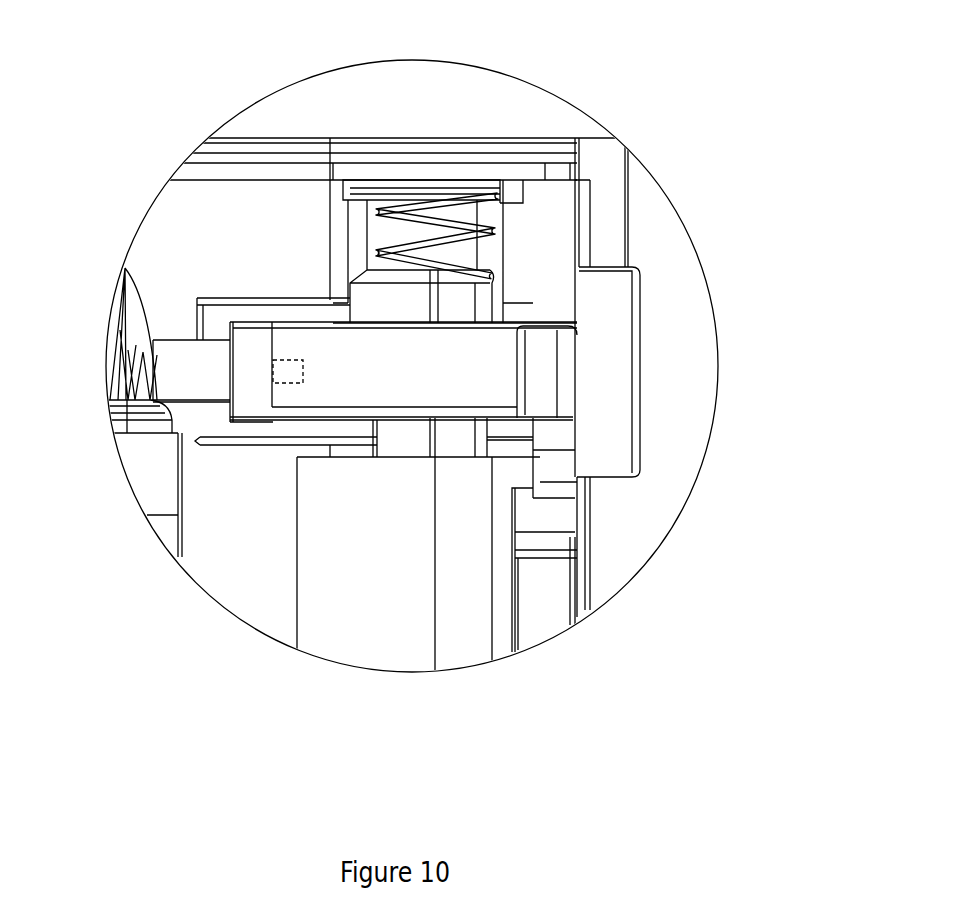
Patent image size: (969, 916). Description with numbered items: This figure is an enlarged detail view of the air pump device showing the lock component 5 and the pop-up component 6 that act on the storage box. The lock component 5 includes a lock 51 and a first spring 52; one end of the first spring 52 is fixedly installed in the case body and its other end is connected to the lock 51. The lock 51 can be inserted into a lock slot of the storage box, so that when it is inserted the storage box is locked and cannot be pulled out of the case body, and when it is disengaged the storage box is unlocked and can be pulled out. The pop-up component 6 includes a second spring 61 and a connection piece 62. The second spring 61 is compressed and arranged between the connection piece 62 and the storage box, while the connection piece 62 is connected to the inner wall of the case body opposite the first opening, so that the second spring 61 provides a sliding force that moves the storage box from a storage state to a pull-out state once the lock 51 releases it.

The lock component 5 is at (115, 146).
The lock 51 is at (293, 373).
The first spring 52 is at (125, 267).
The pop-up component 6 is at (553, 7).
The second spring 61 is at (500, 225).
The connection piece 62 is at (487, 190).